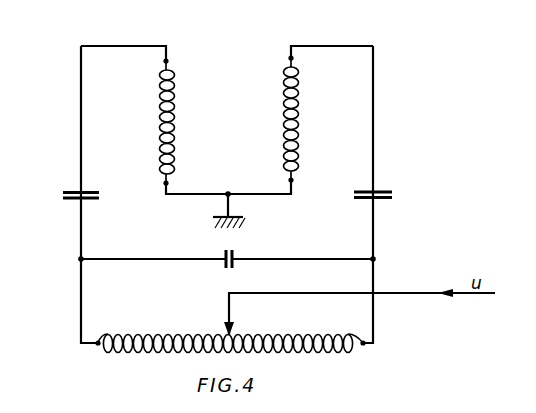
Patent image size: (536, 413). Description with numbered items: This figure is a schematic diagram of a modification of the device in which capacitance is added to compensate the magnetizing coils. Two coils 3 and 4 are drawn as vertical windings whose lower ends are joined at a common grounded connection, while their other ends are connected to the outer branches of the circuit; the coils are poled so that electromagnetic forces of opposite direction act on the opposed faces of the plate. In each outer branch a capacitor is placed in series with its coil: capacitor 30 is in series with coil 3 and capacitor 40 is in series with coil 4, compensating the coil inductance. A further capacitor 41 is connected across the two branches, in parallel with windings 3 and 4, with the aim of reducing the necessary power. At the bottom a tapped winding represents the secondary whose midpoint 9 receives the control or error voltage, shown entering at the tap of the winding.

The coil 3 is at (173, 70).
The coil 4 is at (284, 67).
The midpoint 9 is at (240, 330).
The capacitor 30 is at (73, 190).
The capacitor 40 is at (378, 190).
The capacitor 41 is at (235, 252).